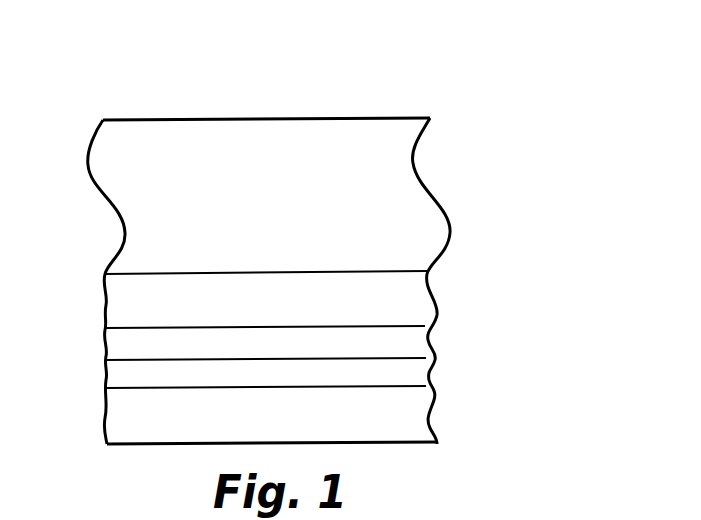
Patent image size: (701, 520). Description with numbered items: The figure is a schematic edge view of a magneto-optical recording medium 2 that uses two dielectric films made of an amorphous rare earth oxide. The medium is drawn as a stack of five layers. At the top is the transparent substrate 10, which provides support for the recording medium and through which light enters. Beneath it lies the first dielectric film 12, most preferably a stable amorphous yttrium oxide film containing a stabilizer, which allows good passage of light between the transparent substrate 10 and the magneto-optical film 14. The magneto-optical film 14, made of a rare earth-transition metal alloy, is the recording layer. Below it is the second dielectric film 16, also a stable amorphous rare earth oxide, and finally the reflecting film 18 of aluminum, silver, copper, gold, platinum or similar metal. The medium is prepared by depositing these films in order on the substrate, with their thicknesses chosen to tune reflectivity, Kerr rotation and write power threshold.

The magneto-optical recording medium 2 is at (314, 70).
The transparent substrate 10 is at (118, 195).
The first dielectric film 12 is at (117, 293).
The magneto-optical film 14 is at (112, 342).
The second dielectric film 16 is at (116, 366).
The reflecting film 18 is at (115, 420).